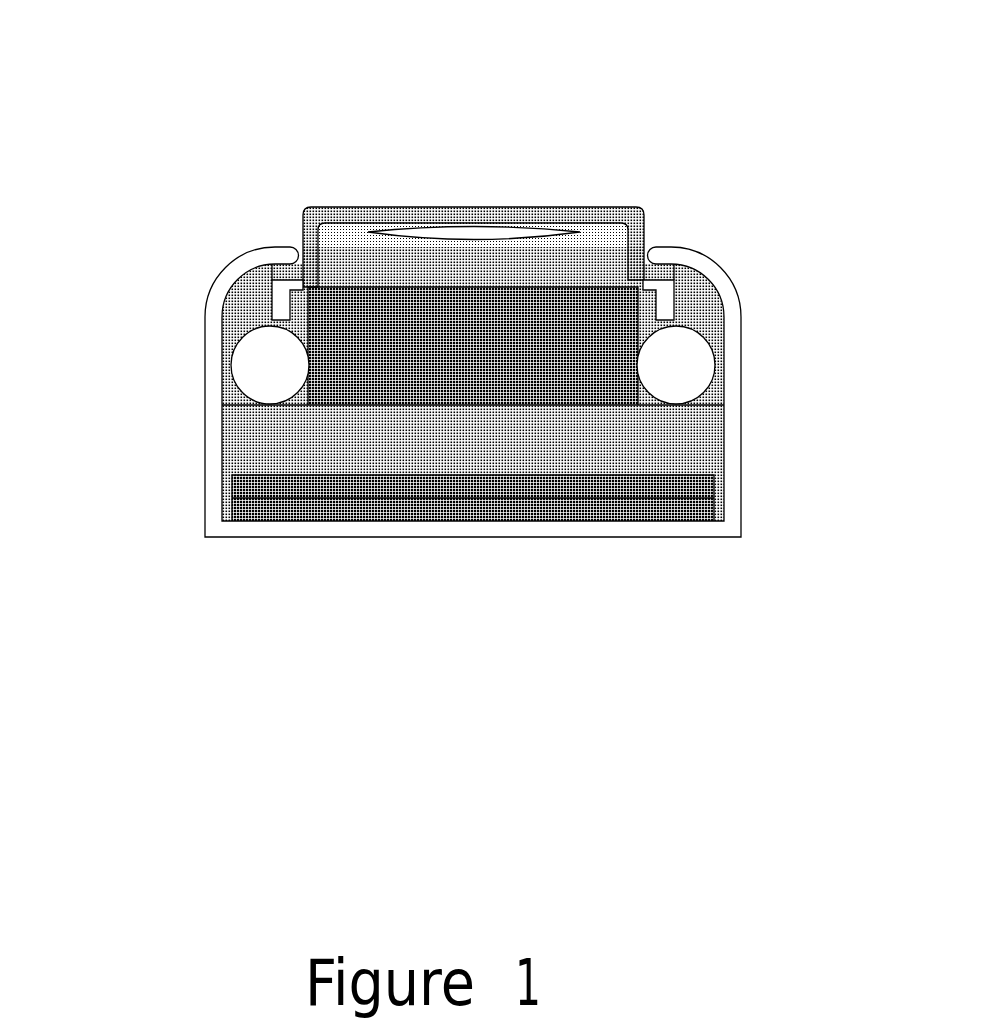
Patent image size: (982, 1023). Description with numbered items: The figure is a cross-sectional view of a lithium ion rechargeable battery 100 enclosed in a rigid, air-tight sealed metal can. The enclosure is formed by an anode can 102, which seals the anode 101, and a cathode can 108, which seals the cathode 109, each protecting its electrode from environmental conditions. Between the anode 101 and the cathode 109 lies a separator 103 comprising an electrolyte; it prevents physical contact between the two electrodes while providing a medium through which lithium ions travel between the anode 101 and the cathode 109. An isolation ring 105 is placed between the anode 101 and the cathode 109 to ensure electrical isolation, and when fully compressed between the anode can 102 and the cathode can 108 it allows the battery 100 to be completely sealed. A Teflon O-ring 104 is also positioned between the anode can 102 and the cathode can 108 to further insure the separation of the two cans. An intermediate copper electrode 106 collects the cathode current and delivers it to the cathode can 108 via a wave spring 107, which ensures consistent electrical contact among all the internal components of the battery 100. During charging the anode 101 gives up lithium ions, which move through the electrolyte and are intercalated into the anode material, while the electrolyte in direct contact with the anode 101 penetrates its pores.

The lithium ion rechargeable battery 100 is at (699, 42).
The anode 101 is at (473, 554).
The anode can 102 is at (419, 429).
The separator 103 is at (408, 476).
The Teflon O-ring 104 is at (198, 403).
The isolation ring 105 is at (405, 384).
The intermediate copper electrode 106 is at (407, 271).
The wave spring 107 is at (522, 184).
The cathode can 108 is at (541, 220).
The cathode 109 is at (706, 306).